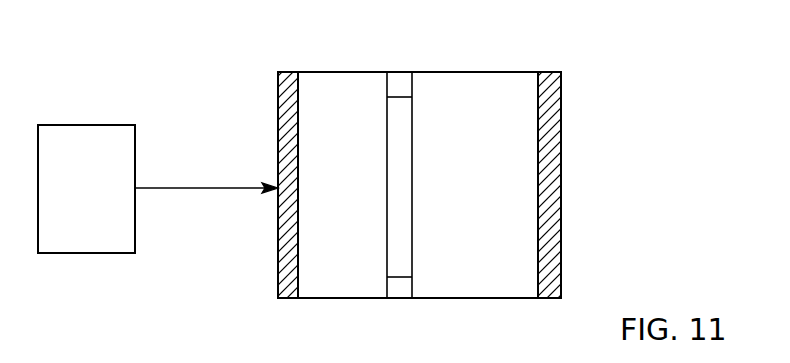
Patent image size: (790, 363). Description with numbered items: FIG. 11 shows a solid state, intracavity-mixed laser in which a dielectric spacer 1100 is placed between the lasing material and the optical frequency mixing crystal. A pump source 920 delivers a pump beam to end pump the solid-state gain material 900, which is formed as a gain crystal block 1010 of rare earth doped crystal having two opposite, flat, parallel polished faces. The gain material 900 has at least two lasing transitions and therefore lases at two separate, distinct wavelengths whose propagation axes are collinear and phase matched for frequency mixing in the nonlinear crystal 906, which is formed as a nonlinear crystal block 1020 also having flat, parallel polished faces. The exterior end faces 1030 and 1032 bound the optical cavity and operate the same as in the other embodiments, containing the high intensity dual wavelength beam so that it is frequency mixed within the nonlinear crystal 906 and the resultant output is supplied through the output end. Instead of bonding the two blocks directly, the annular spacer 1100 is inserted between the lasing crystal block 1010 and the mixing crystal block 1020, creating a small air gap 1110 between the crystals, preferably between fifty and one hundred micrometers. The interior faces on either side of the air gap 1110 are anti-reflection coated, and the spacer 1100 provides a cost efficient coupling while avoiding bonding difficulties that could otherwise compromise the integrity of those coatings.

The pump source 920 is at (100, 125).
The exterior end face 1030 is at (278, 112).
The exterior end face 1032 is at (562, 123).
The gain material crystal block 1010 is at (315, 72).
The nonlinear crystal block 1020 is at (500, 72).
The dielectric spacer 1100 is at (398, 69).
The air gap 1110 is at (410, 178).
The solid-state gain material 900 is at (320, 265).
The nonlinear crystal 906 is at (456, 265).